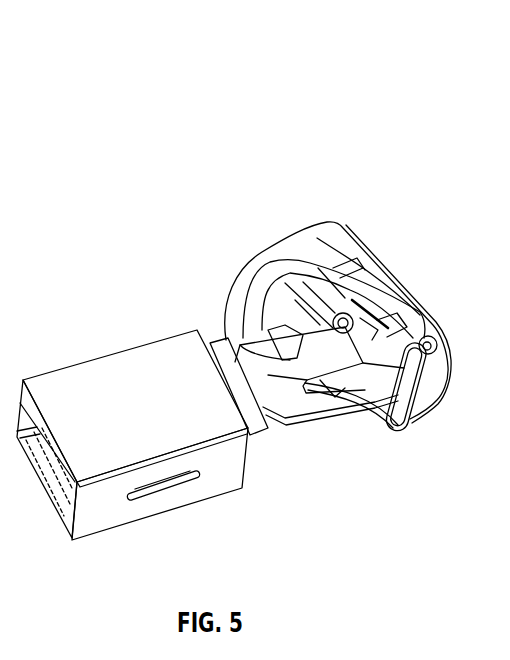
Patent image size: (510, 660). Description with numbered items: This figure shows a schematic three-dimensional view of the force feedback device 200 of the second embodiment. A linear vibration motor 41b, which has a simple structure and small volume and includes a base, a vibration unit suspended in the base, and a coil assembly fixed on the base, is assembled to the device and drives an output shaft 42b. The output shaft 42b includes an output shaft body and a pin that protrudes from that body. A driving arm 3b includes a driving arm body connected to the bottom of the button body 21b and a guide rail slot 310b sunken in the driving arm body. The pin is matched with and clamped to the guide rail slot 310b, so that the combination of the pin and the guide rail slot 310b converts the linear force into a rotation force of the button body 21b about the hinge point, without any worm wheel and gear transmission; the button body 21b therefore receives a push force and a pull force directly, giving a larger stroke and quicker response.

The force feedback device 200 is at (211, 52).
The button body 21b is at (338, 247).
The guide rail slot 310b is at (284, 326).
The linear vibration motor 41b is at (80, 378).
The output shaft 42b is at (288, 398).
The driving arm 3b is at (356, 408).